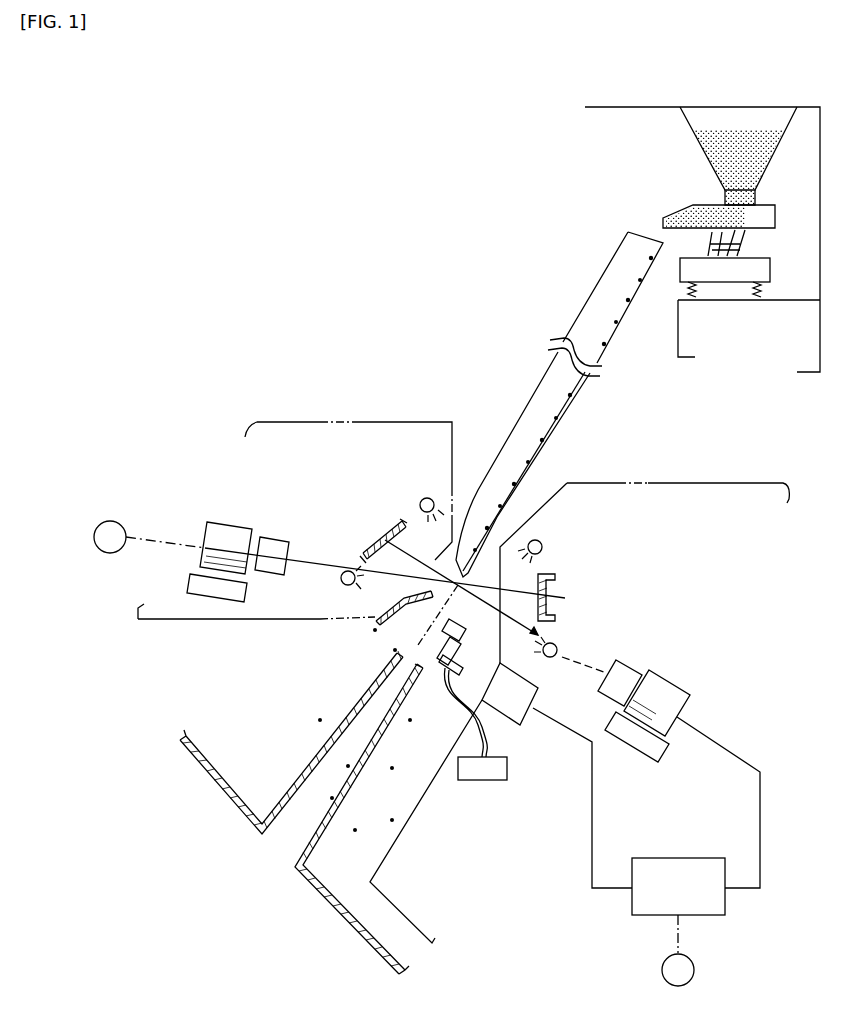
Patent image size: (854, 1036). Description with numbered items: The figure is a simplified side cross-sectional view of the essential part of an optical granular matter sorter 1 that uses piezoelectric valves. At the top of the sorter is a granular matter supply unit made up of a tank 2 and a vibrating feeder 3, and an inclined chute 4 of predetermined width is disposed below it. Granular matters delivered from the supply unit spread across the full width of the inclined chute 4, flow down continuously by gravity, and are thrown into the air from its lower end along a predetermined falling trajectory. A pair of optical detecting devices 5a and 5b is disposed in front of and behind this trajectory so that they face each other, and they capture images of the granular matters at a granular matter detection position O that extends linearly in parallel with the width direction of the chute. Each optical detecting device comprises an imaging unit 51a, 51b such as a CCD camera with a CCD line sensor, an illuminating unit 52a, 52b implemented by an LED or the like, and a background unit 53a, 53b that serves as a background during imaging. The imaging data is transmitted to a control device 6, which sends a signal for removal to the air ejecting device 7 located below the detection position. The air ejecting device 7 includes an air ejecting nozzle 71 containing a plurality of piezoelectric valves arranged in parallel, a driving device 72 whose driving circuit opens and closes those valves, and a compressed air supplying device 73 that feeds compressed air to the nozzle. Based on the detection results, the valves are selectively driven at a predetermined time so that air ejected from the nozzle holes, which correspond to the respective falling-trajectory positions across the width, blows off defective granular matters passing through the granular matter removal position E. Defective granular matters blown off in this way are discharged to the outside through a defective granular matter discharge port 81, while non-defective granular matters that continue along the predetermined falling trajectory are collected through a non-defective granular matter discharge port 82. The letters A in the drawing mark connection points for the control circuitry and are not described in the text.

The optical granular matter sorter 1 is at (438, 268).
The tank 2 is at (700, 122).
The vibrating feeder 3 is at (695, 213).
The inclined chute 4 is at (620, 263).
The optical detecting device 5a is at (315, 432).
The optical detecting device 5b is at (713, 492).
The control device 6 is at (702, 903).
The air ejecting device 7 is at (443, 728).
The imaging unit 51a is at (218, 532).
The imaging unit 51b is at (672, 697).
The illuminating unit 52a is at (421, 497).
The illuminating unit 52b is at (544, 541).
The background unit 53a is at (392, 533).
The background unit 53b is at (555, 590).
The air ejecting nozzle 71 is at (470, 627).
The driving device 72 is at (517, 710).
The compressed air supplying device 73 is at (488, 768).
The defective granular matter discharge port 81 is at (348, 883).
The non-defective granular matter discharge port 82 is at (287, 830).
The granular matter removal position E is at (457, 585).
The granular matter detection position O is at (462, 585).
The section indicator A is at (394, 753).